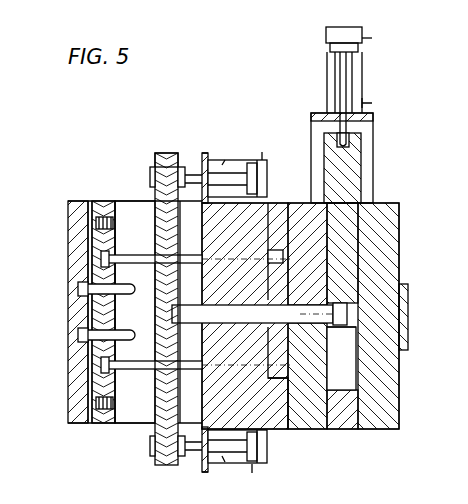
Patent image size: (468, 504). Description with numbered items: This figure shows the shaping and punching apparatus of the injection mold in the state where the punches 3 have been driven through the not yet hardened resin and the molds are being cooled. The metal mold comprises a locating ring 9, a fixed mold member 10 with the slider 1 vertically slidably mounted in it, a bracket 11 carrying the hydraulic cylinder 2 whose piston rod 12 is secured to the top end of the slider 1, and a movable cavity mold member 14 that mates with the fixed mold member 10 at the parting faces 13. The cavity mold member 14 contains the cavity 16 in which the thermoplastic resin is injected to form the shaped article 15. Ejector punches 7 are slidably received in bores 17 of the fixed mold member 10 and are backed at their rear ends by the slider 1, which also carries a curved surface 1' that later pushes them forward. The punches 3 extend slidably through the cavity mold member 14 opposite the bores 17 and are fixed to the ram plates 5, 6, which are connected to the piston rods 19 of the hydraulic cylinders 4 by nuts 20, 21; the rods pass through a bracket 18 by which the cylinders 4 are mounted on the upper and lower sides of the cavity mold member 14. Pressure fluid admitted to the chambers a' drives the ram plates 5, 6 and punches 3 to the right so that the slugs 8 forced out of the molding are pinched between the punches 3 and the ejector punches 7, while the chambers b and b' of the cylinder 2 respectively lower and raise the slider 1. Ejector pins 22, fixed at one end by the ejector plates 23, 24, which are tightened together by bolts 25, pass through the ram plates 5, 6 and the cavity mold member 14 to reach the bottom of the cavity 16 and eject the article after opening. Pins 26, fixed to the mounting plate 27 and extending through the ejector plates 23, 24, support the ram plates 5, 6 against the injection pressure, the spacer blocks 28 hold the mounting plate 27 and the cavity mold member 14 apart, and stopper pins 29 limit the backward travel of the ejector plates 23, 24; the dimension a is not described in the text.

The slider 1 is at (319, 316).
The curved surface of the slider 1' is at (385, 288).
The hydraulic cylinder 2 is at (326, 33).
The punches 3 is at (188, 323).
The hydraulic cylinders 4 is at (202, 202).
The ram plate 5 is at (171, 153).
The ram plate 6 is at (163, 155).
The ejector punches 7 is at (337, 328).
The slugs 8 is at (298, 322).
The locating ring 9 is at (403, 317).
The fixed mold member 10 is at (395, 227).
The bracket 11 is at (373, 160).
The piston rod 12 is at (347, 78).
The parting faces 13 is at (289, 423).
The movable cavity mold member 14 is at (270, 421).
The shaped article 15 is at (283, 255).
The cavity 16 is at (290, 255).
The bores 17 is at (339, 358).
The bracket 18 is at (204, 152).
The piston rods 19 is at (241, 161).
The nut 20 is at (186, 172).
The nut 21 is at (152, 178).
The ejector pins 22 is at (136, 255).
The ejector plate 23 is at (102, 200).
The ejector plate 24 is at (112, 200).
The bolts 25 is at (90, 215).
The pins 26 is at (105, 301).
The mounting plate 27 is at (70, 425).
The spacer blocks 28 is at (134, 425).
The stopper pins 29 is at (96, 233).
The dimension a is at (259, 315).
The chamber of the hydraulic cylinder a' is at (216, 314).
The chamber of the hydraulic cylinder b is at (374, 38).
The chamber of the hydraulic cylinder b' is at (377, 101).